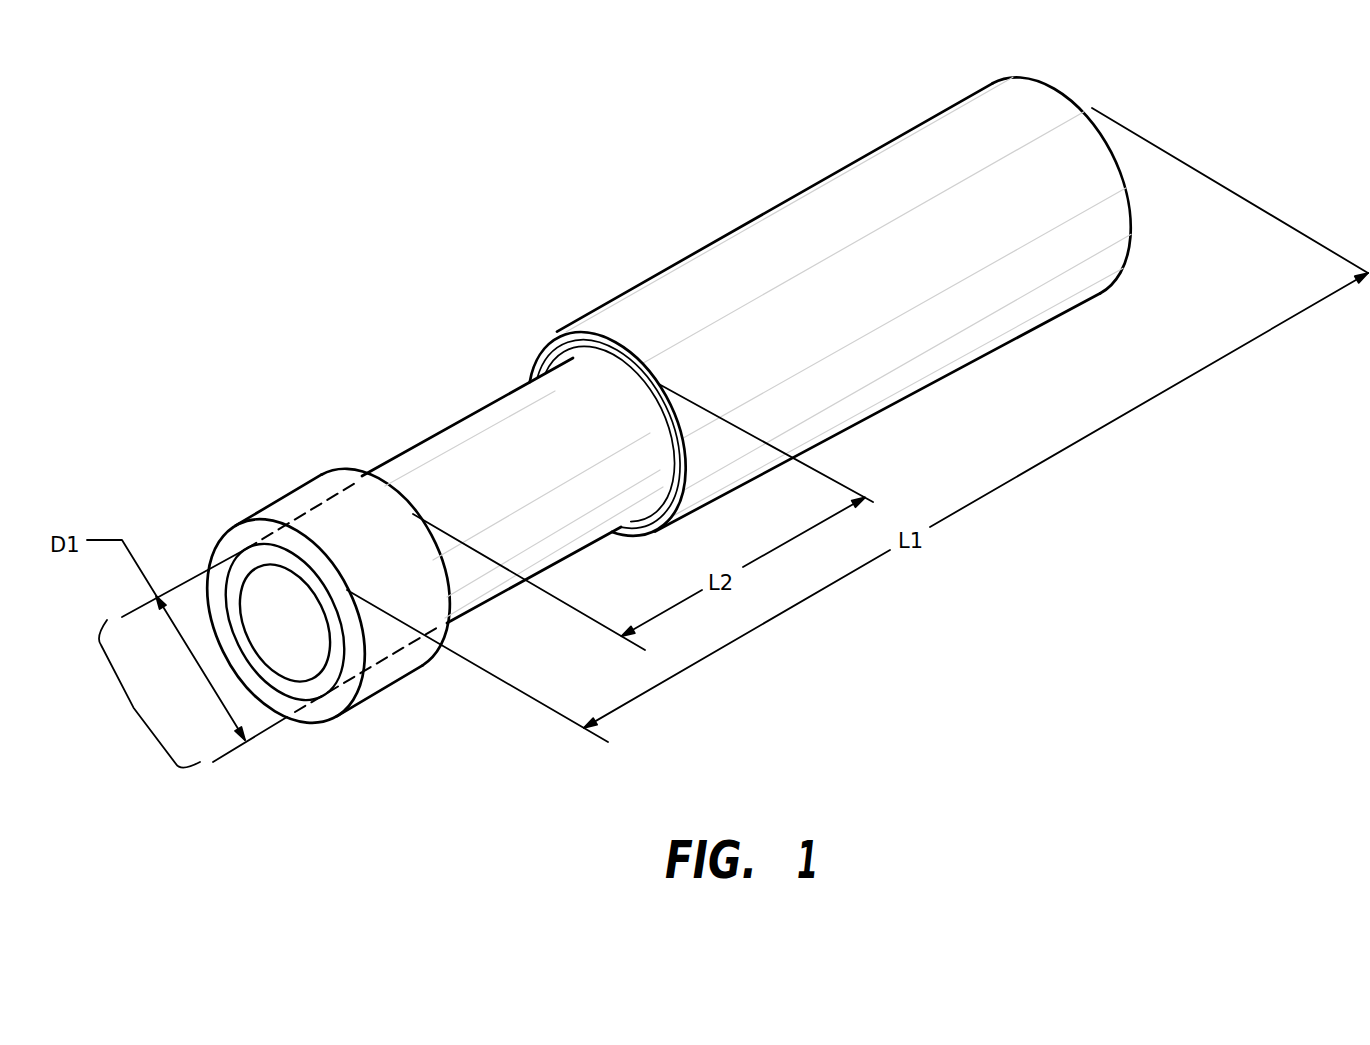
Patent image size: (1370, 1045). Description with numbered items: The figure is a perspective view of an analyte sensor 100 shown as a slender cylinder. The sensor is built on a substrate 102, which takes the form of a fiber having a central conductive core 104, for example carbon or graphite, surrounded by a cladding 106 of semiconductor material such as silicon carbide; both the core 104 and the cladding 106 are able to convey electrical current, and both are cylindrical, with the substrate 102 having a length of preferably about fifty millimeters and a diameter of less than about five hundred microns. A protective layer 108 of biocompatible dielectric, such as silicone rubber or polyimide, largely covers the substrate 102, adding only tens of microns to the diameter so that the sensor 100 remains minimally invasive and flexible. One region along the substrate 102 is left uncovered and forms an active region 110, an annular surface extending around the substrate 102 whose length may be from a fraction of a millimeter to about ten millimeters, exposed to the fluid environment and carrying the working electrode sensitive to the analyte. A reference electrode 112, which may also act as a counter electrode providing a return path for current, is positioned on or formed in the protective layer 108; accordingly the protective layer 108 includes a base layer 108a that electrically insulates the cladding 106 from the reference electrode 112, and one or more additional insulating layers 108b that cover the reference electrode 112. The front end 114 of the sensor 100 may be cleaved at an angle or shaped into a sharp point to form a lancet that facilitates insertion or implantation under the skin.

The analyte sensor 100 is at (238, 348).
The substrate 102 is at (139, 694).
The conductive core 104 is at (300, 633).
The cladding 106 is at (487, 411).
The protective layer 108 is at (653, 460).
The base layer 108a is at (540, 357).
The additional insulating layer 108b is at (552, 347).
The active region 110 is at (402, 430).
The reference electrode 112 is at (575, 350).
The front end 114 is at (288, 730).